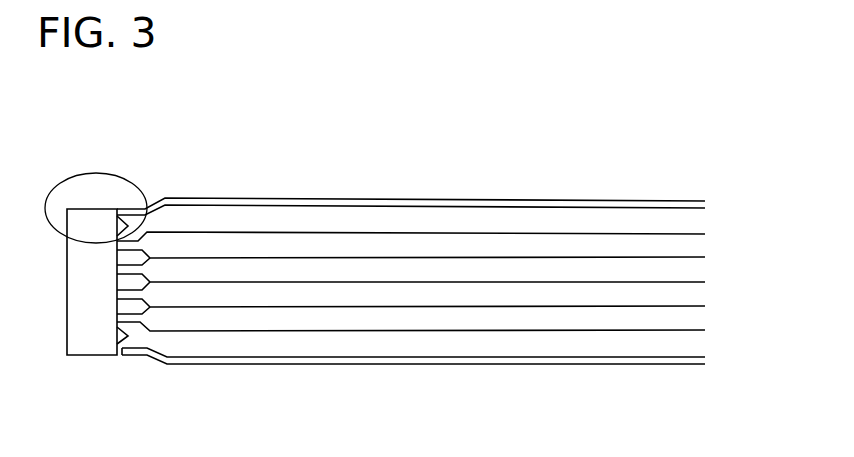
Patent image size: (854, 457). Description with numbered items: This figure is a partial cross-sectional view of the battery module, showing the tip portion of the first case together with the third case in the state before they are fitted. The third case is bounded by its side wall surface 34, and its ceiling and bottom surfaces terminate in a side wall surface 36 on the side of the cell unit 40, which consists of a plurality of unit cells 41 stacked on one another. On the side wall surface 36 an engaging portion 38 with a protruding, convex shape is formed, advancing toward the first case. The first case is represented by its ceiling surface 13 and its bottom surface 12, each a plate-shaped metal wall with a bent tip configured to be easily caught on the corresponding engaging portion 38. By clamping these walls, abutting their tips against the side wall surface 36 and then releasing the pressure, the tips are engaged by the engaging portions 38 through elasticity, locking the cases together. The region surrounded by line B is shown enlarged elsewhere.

The bottom surface of the first case 12 is at (493, 358).
The ceiling surface of the first case 13 is at (510, 201).
The side wall surface of the third case 34 is at (67, 288).
The side wall surface of the third case 36 is at (128, 336).
The engaging portion 38 is at (117, 209).
The cell unit 40 is at (345, 232).
The unit cells 41 is at (719, 235).
The line B is at (142, 192).